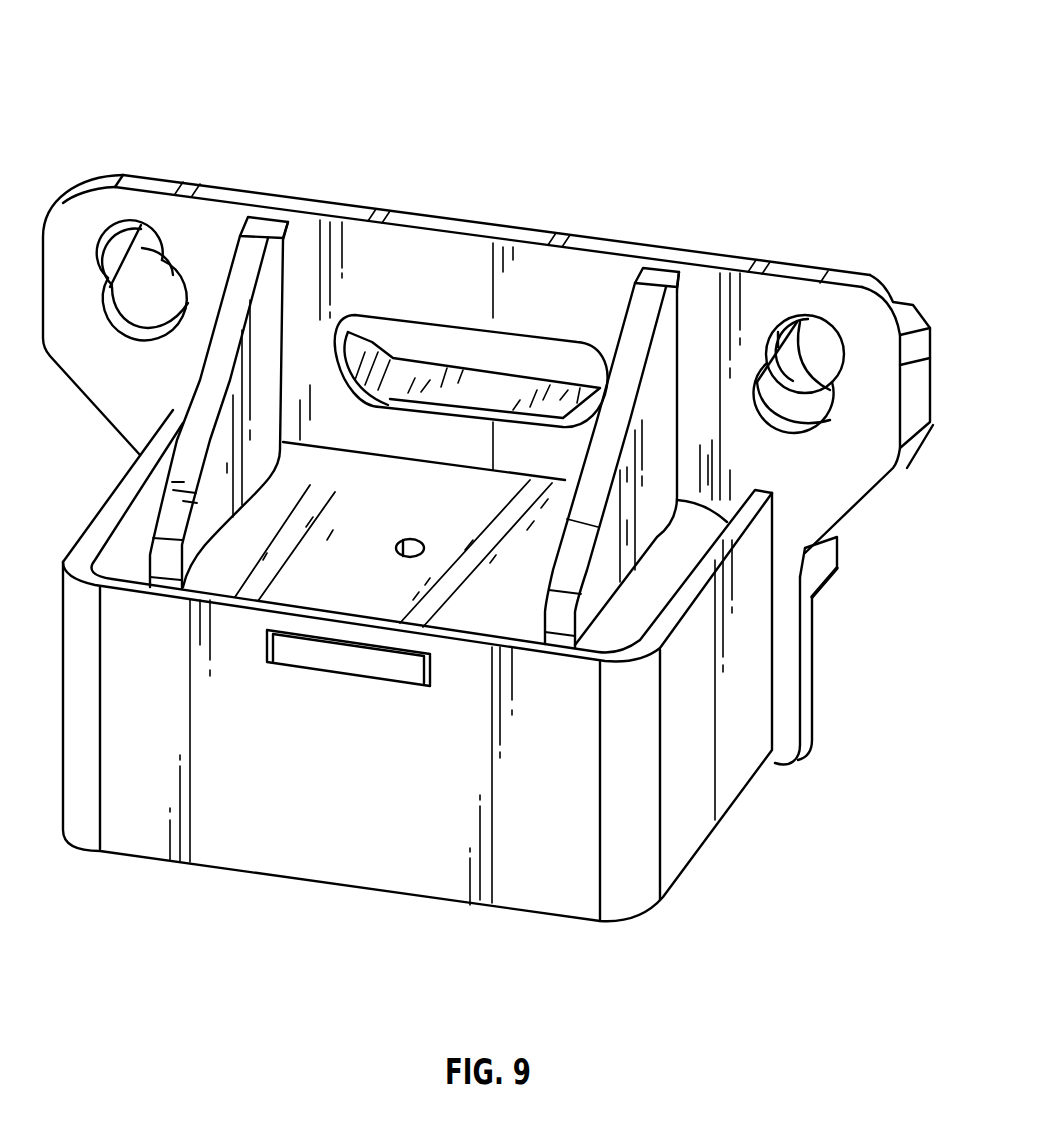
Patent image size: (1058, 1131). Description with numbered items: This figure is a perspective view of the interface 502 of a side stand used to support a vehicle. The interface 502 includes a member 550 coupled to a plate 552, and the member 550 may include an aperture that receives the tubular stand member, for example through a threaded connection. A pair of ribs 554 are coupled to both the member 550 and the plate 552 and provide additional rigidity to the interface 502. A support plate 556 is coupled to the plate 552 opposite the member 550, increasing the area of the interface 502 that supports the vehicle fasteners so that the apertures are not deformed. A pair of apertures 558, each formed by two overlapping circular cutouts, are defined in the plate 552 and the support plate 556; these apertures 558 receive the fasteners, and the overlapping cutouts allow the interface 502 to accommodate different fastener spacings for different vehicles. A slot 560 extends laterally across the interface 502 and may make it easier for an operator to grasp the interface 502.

The interface 502 is at (731, 47).
The member 550 is at (252, 846).
The plate 552 is at (858, 460).
The ribs 554 is at (262, 232).
The support plate 556 is at (913, 318).
The apertures 558 is at (153, 244).
The slot 560 is at (434, 336).